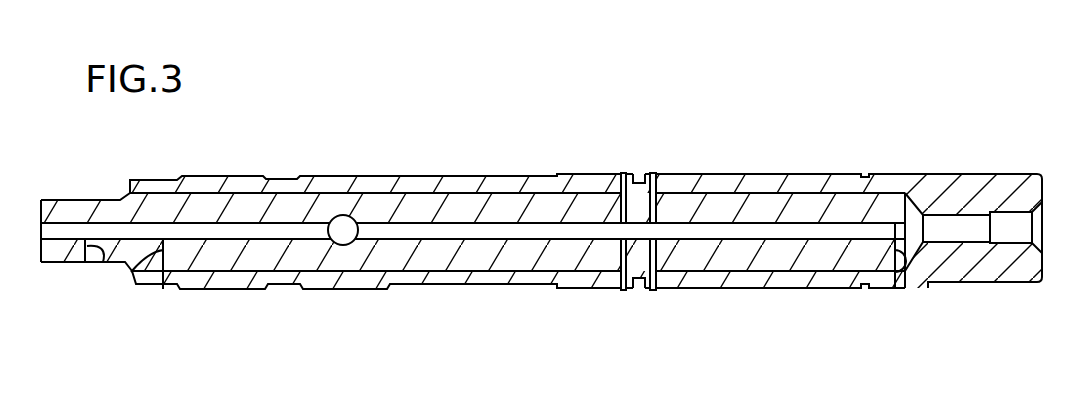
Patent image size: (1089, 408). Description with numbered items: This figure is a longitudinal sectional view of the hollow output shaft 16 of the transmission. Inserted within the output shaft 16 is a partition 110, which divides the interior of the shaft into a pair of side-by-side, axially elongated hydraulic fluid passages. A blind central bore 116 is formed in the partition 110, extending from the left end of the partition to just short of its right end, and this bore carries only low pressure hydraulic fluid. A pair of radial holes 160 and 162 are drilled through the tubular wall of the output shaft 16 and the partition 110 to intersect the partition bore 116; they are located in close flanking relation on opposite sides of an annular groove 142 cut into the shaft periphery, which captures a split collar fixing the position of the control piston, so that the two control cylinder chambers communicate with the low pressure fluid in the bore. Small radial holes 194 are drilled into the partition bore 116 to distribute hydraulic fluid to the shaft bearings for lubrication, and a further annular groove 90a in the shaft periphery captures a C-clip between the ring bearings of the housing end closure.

The blind central bore 116 is at (382, 228).
The partition 110 is at (472, 190).
The output shaft 16 is at (571, 177).
The annular groove 142 is at (641, 175).
The annular groove 90a is at (865, 172).
The small radial holes 194 is at (126, 271).
The radial hole 160 is at (622, 290).
The radial hole 162 is at (652, 290).